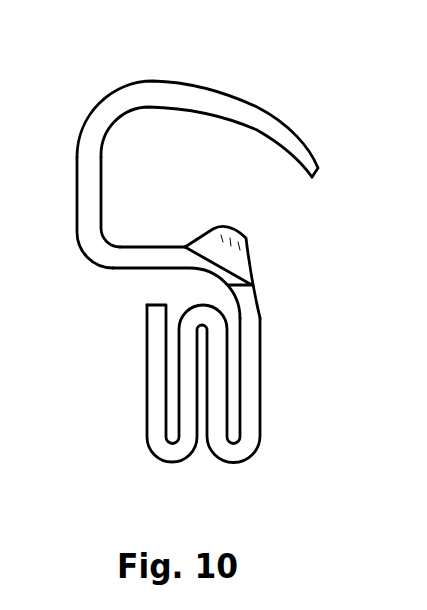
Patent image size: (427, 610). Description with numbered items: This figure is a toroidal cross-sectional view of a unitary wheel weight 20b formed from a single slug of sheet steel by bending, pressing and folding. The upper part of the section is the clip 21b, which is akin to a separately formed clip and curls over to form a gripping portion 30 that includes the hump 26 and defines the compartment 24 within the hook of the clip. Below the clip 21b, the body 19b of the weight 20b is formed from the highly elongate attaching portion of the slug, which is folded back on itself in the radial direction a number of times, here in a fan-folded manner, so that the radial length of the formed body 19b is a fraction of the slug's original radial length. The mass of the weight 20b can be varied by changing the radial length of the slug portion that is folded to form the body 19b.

The body 19b is at (137, 382).
The weight 20b is at (366, 317).
The clip 21b is at (257, 89).
The compartment 24 is at (173, 189).
The hump 26 is at (248, 237).
The gripping portion 30 is at (122, 88).